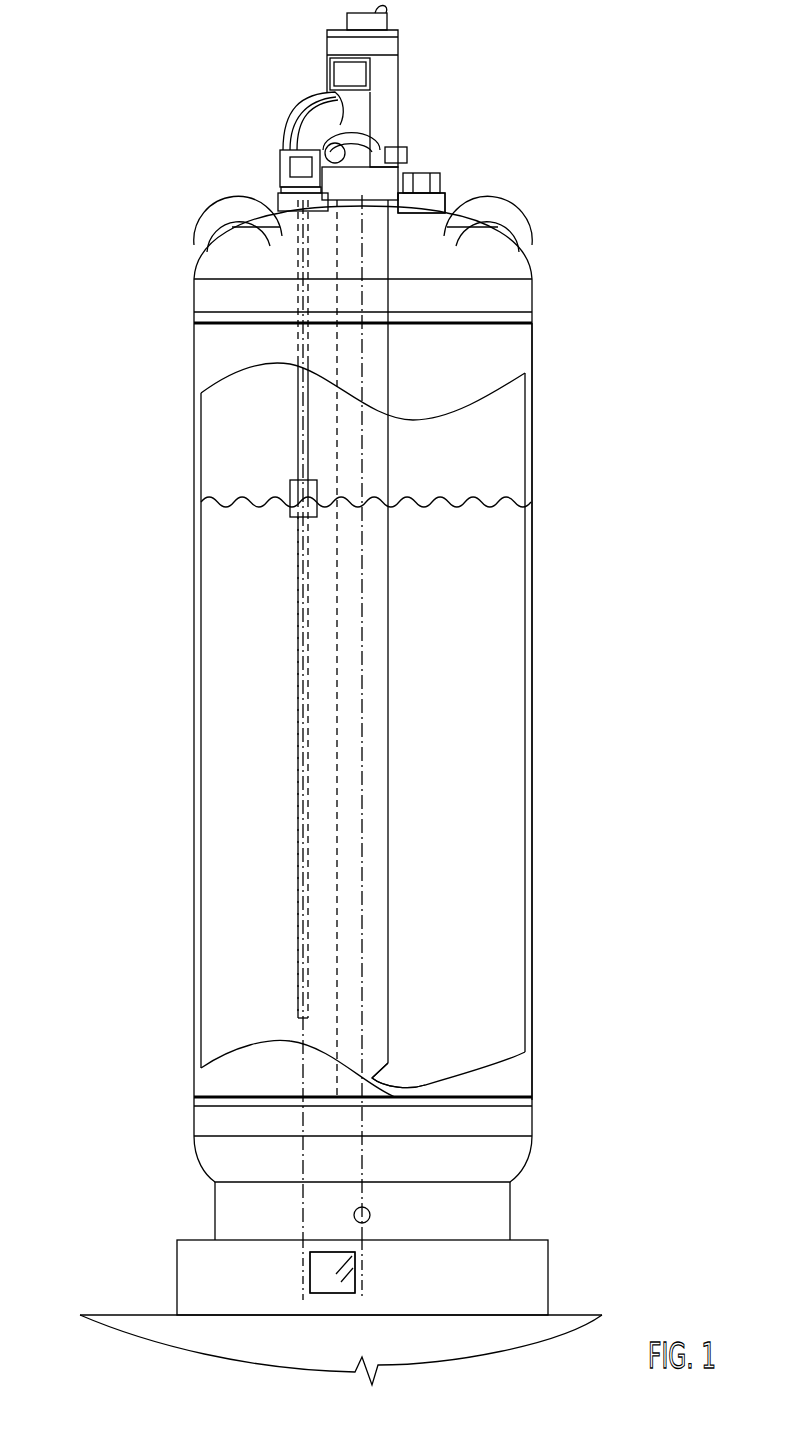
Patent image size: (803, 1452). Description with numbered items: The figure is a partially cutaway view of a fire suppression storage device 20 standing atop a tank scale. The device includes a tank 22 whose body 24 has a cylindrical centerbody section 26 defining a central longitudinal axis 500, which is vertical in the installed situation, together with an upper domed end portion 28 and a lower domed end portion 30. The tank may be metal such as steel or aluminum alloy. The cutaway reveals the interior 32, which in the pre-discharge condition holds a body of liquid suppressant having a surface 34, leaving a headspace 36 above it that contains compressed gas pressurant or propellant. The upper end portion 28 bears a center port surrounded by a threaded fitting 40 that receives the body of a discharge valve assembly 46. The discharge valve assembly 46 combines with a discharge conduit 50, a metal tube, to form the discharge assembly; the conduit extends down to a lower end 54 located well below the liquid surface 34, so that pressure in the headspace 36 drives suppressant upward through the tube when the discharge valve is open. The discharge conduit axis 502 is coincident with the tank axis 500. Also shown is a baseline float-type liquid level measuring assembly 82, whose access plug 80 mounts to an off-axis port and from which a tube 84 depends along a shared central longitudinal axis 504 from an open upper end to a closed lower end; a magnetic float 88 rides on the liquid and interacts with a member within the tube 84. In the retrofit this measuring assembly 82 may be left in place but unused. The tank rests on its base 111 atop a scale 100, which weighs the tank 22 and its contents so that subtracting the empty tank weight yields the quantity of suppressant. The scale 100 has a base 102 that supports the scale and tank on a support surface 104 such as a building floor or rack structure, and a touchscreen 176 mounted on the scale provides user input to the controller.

The fire suppression storage device 20 is at (120, 117).
The tank 22 is at (567, 507).
The body 24 is at (549, 366).
The cylindrical centerbody section 26 is at (533, 680).
The upper domed end portion 28 is at (459, 179).
The lower domed end portion 30 is at (497, 1148).
The interior 32 is at (496, 437).
The surface 34 is at (450, 500).
The headspace 36 is at (256, 434).
The fitting 40 is at (404, 178).
The discharge valve assembly 46 is at (422, 48).
The discharge conduit 50 is at (383, 815).
The lower end 54 is at (347, 1110).
The access plug 80 is at (274, 183).
The liquid level measuring assembly 82 is at (265, 632).
The tube 84 is at (298, 778).
The magnetic float 88 is at (303, 497).
The scale 100 is at (572, 1249).
The base 102 is at (533, 1278).
The support surface 104 is at (140, 1313).
The base 111 is at (489, 1213).
The touchscreen 176 is at (336, 1284).
The central longitudinal axis 500 is at (355, 1268).
The discharge conduit axis 502 is at (415, 1290).
The central longitudinal axis 504 is at (310, 1290).